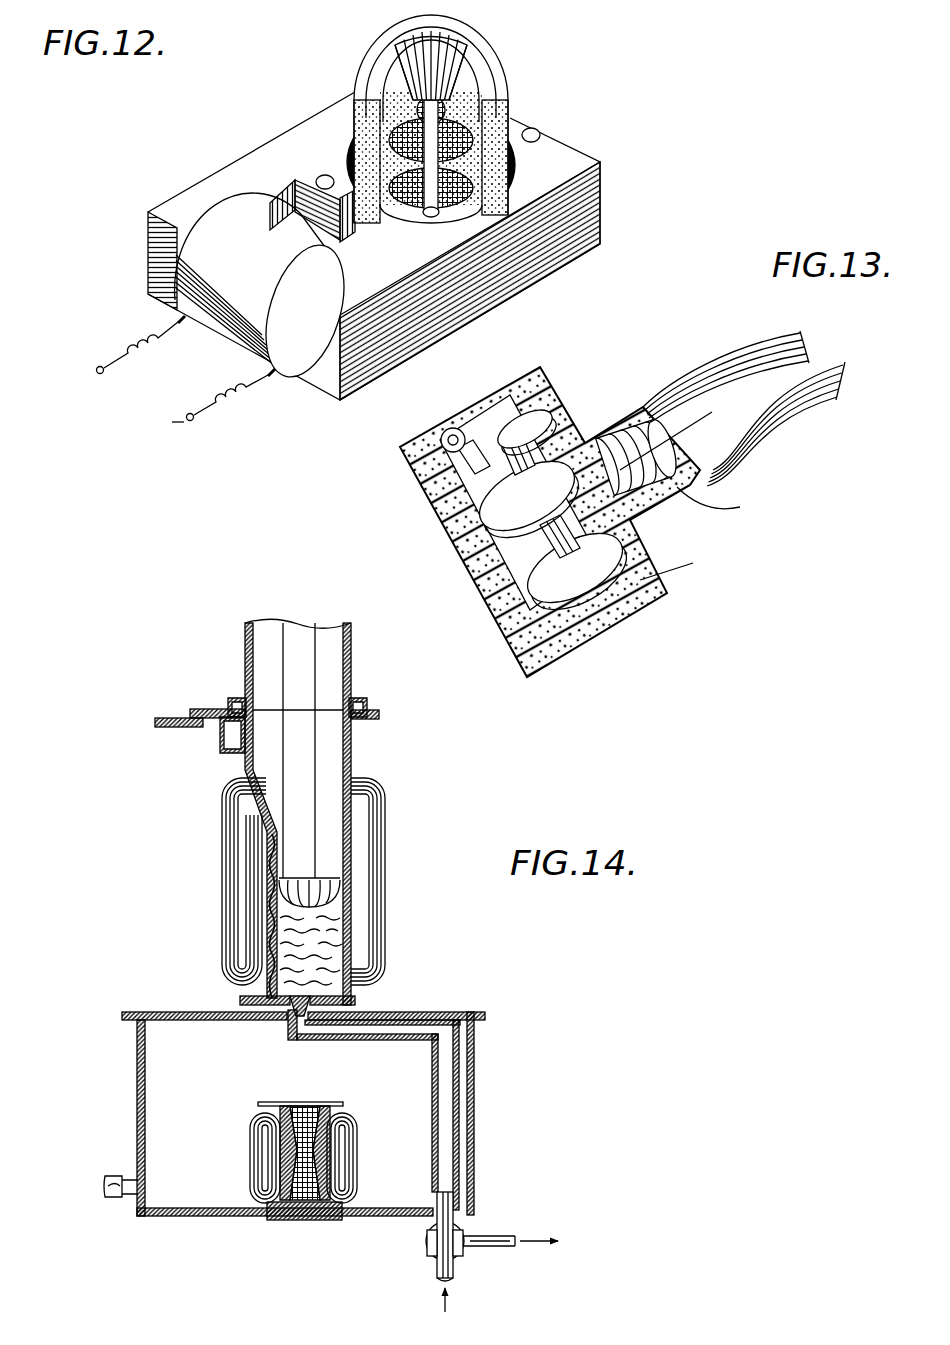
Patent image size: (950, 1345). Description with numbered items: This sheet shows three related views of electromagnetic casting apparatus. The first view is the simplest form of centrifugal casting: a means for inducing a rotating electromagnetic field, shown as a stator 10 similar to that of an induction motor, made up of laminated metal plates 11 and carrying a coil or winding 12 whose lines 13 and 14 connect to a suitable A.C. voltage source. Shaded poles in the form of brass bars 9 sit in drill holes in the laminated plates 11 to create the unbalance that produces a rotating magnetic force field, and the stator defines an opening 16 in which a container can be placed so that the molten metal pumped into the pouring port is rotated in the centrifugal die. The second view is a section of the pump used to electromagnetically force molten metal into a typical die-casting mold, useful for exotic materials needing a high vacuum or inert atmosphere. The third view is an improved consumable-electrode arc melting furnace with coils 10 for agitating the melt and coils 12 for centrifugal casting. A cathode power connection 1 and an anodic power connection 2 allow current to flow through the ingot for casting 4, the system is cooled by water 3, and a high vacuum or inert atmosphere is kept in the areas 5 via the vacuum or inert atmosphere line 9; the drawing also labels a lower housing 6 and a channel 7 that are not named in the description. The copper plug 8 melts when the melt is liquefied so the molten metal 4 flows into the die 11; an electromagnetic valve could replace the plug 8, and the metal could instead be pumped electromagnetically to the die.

In FIG. 14, the cathode power connection 1 is at (300, 655).
In FIG. 14, the anodic power connection 2 is at (151, 720).
In FIG. 14, the water 3 is at (365, 760).
In FIG. 14, the ingot for casting 4 is at (321, 936).
In FIG. 14, the high vacuum or inert atmosphere areas 5 is at (275, 752).
In FIG. 14, the lower housing 6 is at (483, 1062).
In FIG. 14, the duct channel 7 is at (449, 1146).
In FIG. 14, the copper plug 8 is at (282, 1027).
In FIG. 12, the brass bars / vacuum or inert atmosphere line 9 is at (321, 172).
In FIG. 14, the brass bars / vacuum or inert atmosphere line 9 is at (102, 1180).
In FIG. 12, the stator / coils 10 is at (499, 313).
In FIG. 14, the stator / coils 10 is at (379, 951).
In FIG. 12, the laminated metal plates / die 11 is at (586, 221).
In FIG. 14, the laminated metal plates / die 11 is at (266, 1208).
In FIG. 12, the coil or winding 12 is at (228, 345).
In FIG. 12, the line 13 is at (173, 313).
In FIG. 12, the line 14 is at (272, 378).
In FIG. 12, the opening 16 is at (527, 160).